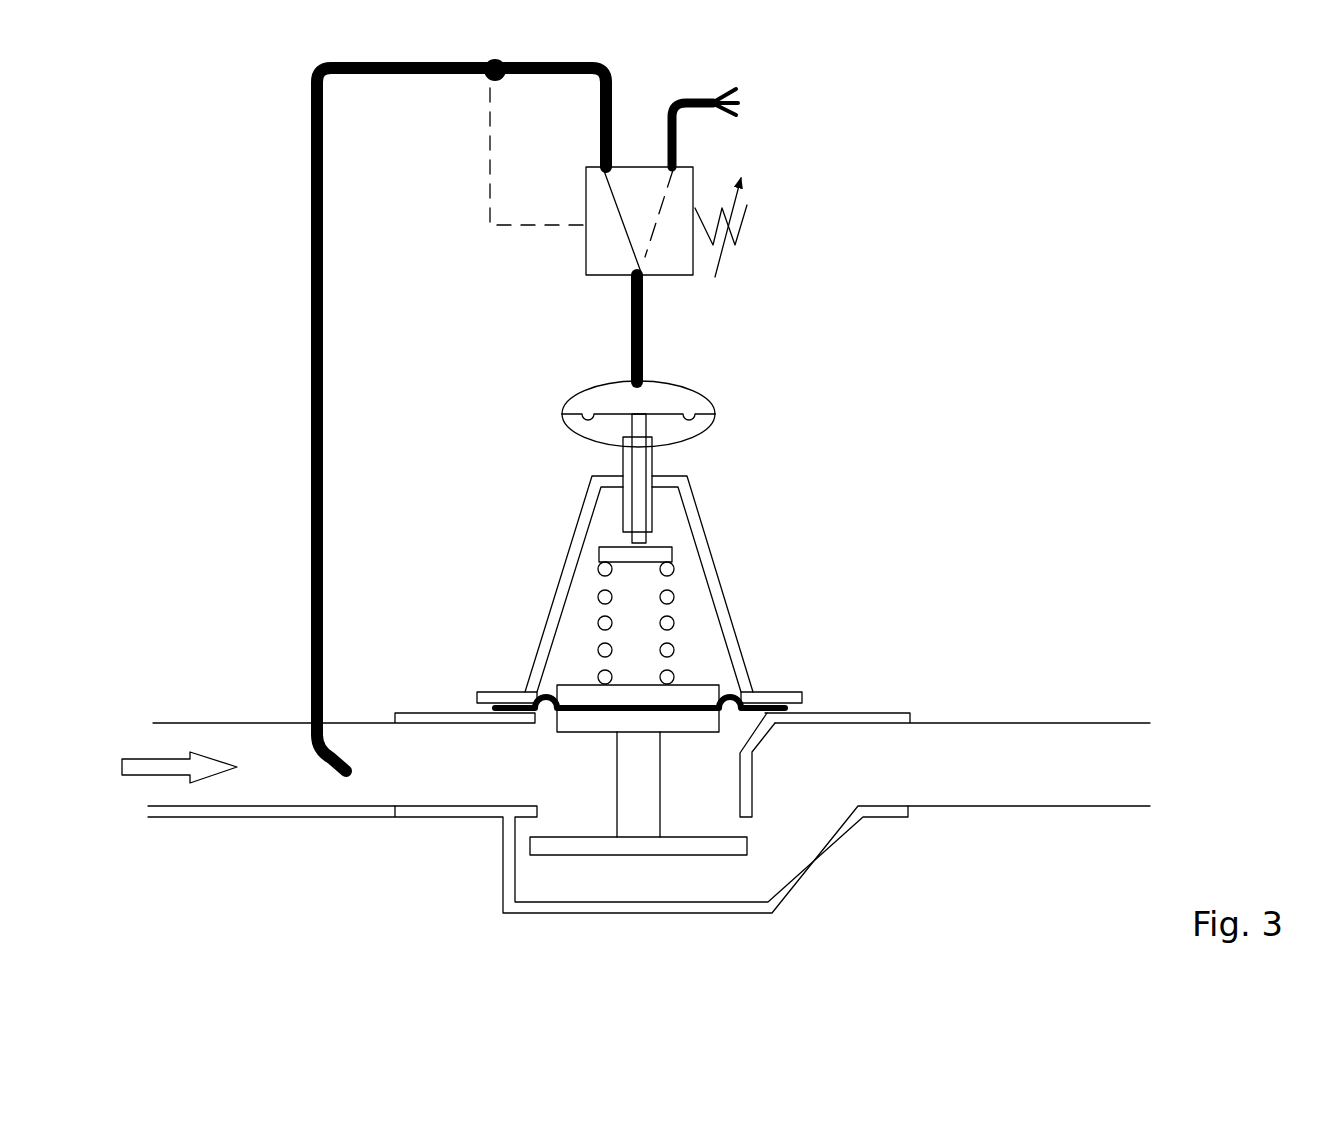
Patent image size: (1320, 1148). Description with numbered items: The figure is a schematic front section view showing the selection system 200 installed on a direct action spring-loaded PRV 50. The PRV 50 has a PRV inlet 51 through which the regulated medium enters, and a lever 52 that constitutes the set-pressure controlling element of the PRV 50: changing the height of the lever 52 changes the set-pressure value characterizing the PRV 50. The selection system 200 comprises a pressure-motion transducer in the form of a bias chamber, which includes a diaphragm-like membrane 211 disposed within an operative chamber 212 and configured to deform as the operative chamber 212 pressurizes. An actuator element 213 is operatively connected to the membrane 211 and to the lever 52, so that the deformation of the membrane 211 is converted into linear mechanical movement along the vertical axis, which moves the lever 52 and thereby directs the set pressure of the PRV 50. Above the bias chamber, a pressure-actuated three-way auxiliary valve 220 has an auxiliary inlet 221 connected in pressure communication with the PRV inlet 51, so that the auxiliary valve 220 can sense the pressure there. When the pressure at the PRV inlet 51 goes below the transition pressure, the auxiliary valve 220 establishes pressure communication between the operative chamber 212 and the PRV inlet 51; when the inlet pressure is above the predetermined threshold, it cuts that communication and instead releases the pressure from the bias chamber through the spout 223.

The direct action spring-loaded PRV 50 is at (862, 874).
The PRV inlet 51 is at (313, 786).
The lever 52 is at (638, 513).
The selection system 200 is at (628, 599).
The membrane 211 is at (668, 412).
The operative chamber 212 is at (610, 405).
The actuator element 213 is at (653, 462).
The auxiliary valve 220 is at (696, 282).
The auxiliary inlet 221 is at (613, 163).
The spout 223 is at (705, 96).